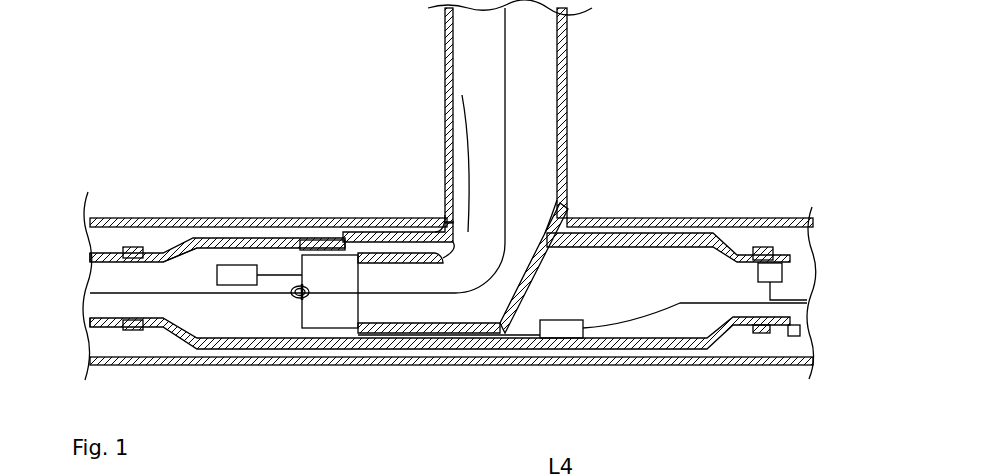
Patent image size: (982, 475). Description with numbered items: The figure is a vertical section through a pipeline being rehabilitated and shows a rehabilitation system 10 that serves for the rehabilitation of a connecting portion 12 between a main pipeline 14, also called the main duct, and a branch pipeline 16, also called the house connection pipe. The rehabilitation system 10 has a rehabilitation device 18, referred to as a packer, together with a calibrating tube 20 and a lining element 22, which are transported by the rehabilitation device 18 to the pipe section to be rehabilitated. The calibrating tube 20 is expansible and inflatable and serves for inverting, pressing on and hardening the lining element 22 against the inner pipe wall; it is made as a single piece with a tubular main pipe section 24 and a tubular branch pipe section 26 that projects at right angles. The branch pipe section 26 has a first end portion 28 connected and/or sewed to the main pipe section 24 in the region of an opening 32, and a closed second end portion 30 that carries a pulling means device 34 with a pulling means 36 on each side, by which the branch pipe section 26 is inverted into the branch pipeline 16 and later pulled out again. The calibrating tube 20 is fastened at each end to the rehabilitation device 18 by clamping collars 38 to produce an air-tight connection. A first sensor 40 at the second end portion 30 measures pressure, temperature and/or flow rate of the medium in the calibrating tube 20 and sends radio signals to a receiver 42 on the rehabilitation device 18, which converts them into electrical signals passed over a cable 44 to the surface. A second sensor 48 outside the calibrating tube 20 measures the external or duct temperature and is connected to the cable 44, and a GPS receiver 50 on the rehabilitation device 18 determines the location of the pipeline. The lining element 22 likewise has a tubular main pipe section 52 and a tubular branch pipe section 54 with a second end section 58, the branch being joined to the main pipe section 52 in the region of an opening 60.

The rehabilitation system 10 is at (738, 232).
The connecting portion 12 is at (582, 200).
The main pipeline 14 is at (267, 220).
The branch pipeline 16 is at (567, 80).
The rehabilitation device 18 is at (101, 262).
The calibrating tube 20 is at (243, 243).
The lining element 22 is at (390, 233).
The main pipe section 24 is at (207, 240).
The branch pipe section 26 is at (320, 250).
The first end portion 28 is at (443, 207).
The second end portion 30 is at (301, 305).
The opening 32 is at (568, 185).
The pulling means device 34 is at (291, 303).
The pulling means 36 is at (200, 296).
The clamping collars 38 is at (132, 252).
The first sensor 40 is at (237, 287).
The receiver 42 is at (548, 340).
The cable 44 is at (608, 330).
The second sensor 48 is at (789, 335).
The GPS receiver 50 is at (770, 272).
The main pipe section 52 is at (637, 232).
The branch pipe section 54 is at (366, 333).
The second end section 58 is at (603, 150).
The opening 60 is at (445, 88).